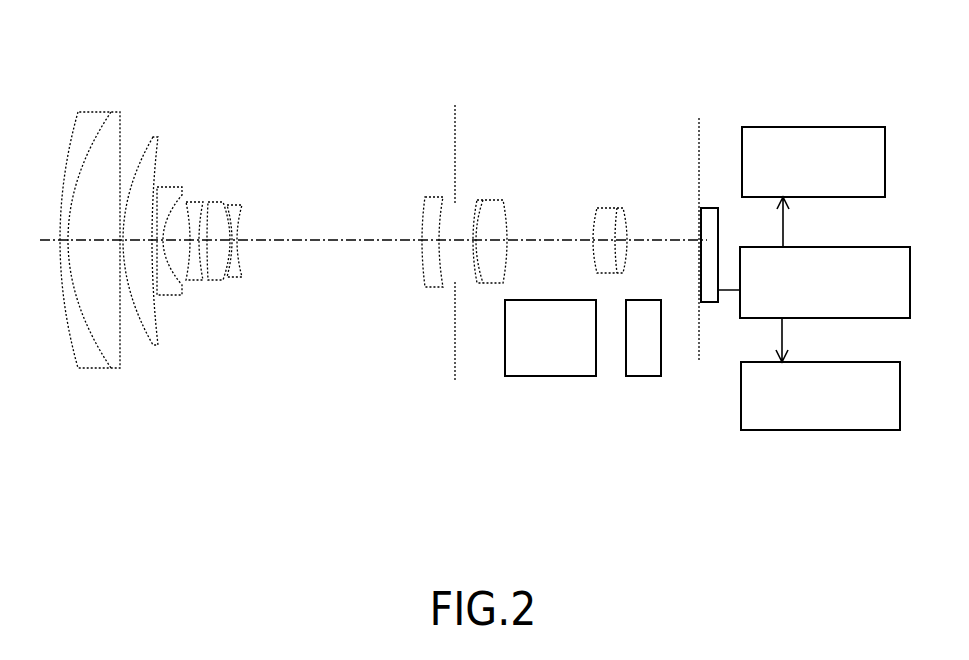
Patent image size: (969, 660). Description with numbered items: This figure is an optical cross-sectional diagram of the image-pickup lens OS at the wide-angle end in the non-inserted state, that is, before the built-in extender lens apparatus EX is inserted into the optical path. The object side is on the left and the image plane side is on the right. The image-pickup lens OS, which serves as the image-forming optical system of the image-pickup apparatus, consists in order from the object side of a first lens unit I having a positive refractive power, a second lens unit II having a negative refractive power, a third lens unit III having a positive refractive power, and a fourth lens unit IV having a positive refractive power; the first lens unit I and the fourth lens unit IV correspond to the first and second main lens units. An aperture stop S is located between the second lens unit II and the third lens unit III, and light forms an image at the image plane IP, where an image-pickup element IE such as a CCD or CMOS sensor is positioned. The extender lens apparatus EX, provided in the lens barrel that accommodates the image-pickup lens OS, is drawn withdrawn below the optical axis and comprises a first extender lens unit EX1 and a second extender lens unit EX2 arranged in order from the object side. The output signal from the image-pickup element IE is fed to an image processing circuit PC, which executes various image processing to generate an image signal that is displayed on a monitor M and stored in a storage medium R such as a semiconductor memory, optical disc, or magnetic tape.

The image-pickup lens OS is at (325, 102).
The first lens unit I is at (163, 103).
The second lens unit II is at (245, 178).
The third lens unit III is at (418, 192).
The fourth lens unit IV is at (635, 202).
The aperture stop S is at (455, 226).
The image plane IP is at (703, 224).
The image-pickup element IE is at (707, 208).
The extender lens apparatus EX is at (589, 397).
The first extender lens unit EX1 is at (522, 374).
The second extender lens unit EX2 is at (649, 366).
The monitor M is at (795, 127).
The image processing circuit PC is at (802, 247).
The storage medium R is at (797, 362).